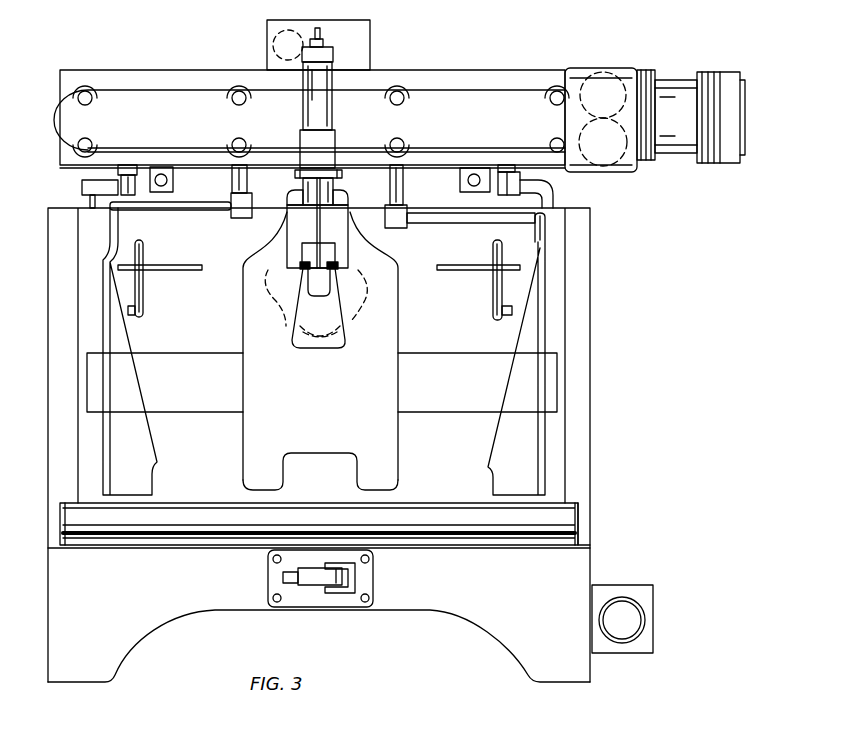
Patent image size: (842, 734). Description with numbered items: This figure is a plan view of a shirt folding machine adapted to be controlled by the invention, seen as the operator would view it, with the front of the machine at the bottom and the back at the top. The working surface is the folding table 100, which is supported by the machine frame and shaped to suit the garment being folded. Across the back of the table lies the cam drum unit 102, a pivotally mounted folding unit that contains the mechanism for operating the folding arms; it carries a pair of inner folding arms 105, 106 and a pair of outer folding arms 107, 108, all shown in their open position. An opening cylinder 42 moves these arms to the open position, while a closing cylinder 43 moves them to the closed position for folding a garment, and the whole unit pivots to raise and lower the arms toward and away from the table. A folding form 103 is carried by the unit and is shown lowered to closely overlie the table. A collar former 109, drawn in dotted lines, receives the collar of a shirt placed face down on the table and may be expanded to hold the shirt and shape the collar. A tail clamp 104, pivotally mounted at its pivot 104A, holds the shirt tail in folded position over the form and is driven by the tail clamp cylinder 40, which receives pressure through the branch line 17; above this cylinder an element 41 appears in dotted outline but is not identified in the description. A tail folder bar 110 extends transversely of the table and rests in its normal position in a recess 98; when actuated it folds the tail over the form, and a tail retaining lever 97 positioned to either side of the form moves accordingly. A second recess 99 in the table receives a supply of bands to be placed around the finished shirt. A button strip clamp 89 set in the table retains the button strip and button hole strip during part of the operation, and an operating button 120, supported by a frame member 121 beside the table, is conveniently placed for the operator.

The branch line 17 is at (326, 38).
The tail clamp cylinder 40 is at (336, 112).
The housing 41 is at (283, 27).
The opening cylinder 42 is at (598, 175).
The closing cylinder 43 is at (601, 70).
The button strip clamp 89 is at (366, 582).
The tail retaining lever 97 is at (163, 266).
The recess 98 is at (528, 548).
The recess 99 is at (468, 365).
The folding table 100 is at (584, 438).
The cam drum unit 102 is at (566, 58).
The folding form 103 is at (395, 447).
The tail clamp 104 is at (348, 342).
The pivot 104A is at (333, 178).
The inner folding arm 105 is at (517, 342).
The inner folding arm 106 is at (124, 351).
The outer folding arm 107 is at (88, 197).
The outer folding arm 108 is at (551, 202).
The collar former 109 is at (295, 338).
The tail folder bar 110 is at (420, 510).
The operating button 120 is at (637, 622).
The frame member 121 is at (645, 597).